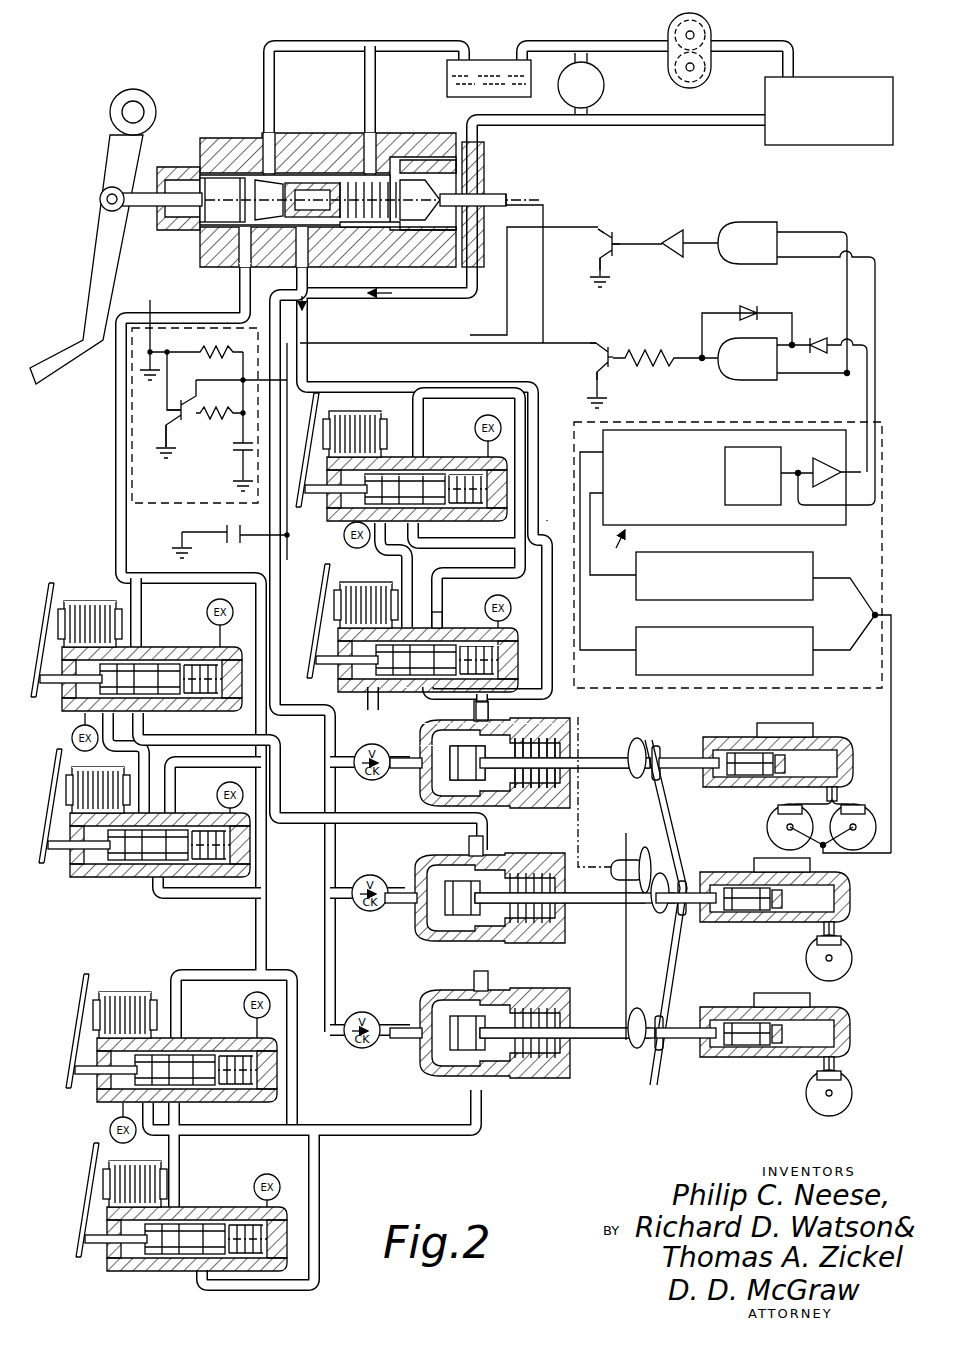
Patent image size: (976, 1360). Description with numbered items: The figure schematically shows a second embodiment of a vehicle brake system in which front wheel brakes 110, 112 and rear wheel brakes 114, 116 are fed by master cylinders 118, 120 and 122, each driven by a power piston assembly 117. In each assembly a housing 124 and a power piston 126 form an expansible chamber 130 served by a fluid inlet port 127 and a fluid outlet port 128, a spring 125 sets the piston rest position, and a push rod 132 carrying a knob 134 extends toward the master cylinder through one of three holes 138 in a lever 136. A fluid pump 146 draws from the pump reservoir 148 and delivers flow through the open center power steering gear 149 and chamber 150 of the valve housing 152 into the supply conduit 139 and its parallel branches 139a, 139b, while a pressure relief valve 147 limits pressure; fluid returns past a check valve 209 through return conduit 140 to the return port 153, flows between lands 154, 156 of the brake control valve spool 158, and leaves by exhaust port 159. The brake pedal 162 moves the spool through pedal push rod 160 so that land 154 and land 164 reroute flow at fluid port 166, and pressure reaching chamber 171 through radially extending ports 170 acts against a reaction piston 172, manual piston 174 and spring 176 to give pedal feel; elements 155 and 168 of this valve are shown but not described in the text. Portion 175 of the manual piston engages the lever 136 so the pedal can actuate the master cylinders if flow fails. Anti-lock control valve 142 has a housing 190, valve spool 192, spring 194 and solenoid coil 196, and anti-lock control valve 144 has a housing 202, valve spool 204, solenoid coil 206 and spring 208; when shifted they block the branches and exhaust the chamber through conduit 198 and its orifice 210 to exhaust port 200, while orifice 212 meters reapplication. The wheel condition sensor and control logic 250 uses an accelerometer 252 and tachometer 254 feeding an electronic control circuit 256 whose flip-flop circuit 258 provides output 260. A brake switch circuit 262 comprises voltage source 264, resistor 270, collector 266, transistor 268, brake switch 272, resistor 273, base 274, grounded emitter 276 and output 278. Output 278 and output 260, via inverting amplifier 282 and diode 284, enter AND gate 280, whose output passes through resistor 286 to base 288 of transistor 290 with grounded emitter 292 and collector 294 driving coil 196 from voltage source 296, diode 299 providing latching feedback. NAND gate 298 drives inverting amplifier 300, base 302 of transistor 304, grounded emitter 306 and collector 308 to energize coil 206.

The front wheel brake 110 is at (806, 1085).
The front wheel brake 112 is at (806, 950).
The rear wheel brake 114 is at (770, 813).
The rear wheel brake 116 is at (858, 803).
The power piston assembly 117 is at (512, 897).
The master cylinder 118 is at (740, 1005).
The master cylinder 120 is at (742, 888).
The master cylinder 122 is at (742, 752).
The housing 124 is at (540, 800).
The spring 125 is at (550, 725).
The power piston 126 is at (490, 795).
The fluid inlet port 127 is at (476, 712).
The fluid outlet port 128 is at (310, 781).
The expansible chamber 130 is at (438, 790).
The push rod 132 is at (590, 758).
The knob 134 is at (658, 745).
The lever 136 is at (626, 955).
The holes 138 is at (630, 768).
The supply conduit 139 is at (458, 285).
The parallel branch 139a is at (420, 408).
The parallel branch 139b is at (548, 515).
The return conduit 140 is at (268, 548).
The anti-lock control valve 142 is at (95, 598).
The anti-lock control valve 144 is at (120, 872).
The fluid pump 146 is at (712, 24).
The pressure relief valve 147 is at (604, 78).
The pump reservoir 148 is at (488, 58).
The open center power steering gear 149 is at (840, 76).
The chamber 150 is at (327, 187).
The valve housing 152 is at (245, 160).
The return port 153 is at (240, 262).
The land 154 is at (190, 232).
The outlet conduit 155 is at (195, 240).
The land 156 is at (295, 250).
The brake control valve spool 158 is at (212, 178).
The exhaust port 159 is at (272, 168).
The pedal push rod 160 is at (160, 206).
The brake pedal 162 is at (100, 218).
The land 164 is at (320, 183).
The fluid port 166 is at (311, 258).
The inlet port 168 is at (378, 160).
The radially extending ports 170 is at (272, 180).
The chamber 171 is at (364, 234).
The reaction piston 172 is at (423, 202).
The manual piston 174 is at (425, 192).
The portion 175 is at (495, 192).
The spring 176 is at (362, 180).
The housing 190 is at (460, 508).
The valve spool 192 is at (427, 467).
The spring 194 is at (495, 480).
The solenoid coil 196 is at (365, 418).
The conduit 198 is at (417, 631).
The exhaust port 200 is at (343, 524).
The housing 202 is at (375, 680).
The valve spool 204 is at (408, 684).
The solenoid coil 206 is at (345, 600).
The spring 208 is at (505, 645).
The check valve 209 is at (366, 771).
The orifice 210 is at (408, 545).
The orifice 212 is at (442, 622).
The wheel condition sensor and control logic 250 is at (728, 569).
The accelerometer 252 is at (815, 560).
The tachometer 254 is at (820, 630).
The electronic control circuit 256 is at (611, 547).
The flip-flop circuit 258 is at (752, 446).
The output 260 is at (785, 505).
The brake switch circuit 262 is at (170, 500).
The voltage source 264 is at (233, 452).
The collector 266 is at (181, 434).
The transistor 268 is at (150, 404).
The resistor 270 is at (220, 429).
The brake switch 272 is at (150, 330).
The resistor 273 is at (191, 353).
The base 274 is at (237, 367).
The emitter 276 is at (160, 410).
The output 278 is at (318, 378).
The AND gate 280 is at (718, 370).
The inverting amplifier 282 is at (824, 460).
The diode 284 is at (818, 337).
The resistor 286 is at (655, 350).
The base 288 is at (612, 345).
The transistor 290 is at (606, 356).
The emitter 292 is at (614, 366).
The collector 294 is at (596, 342).
The voltage source 296 is at (236, 545).
The NAND gate 298 is at (760, 221).
The diode 299 is at (748, 306).
The inverting amplifier 300 is at (676, 256).
The base 302 is at (604, 256).
The transistor 304 is at (618, 234).
The emitter 306 is at (600, 246).
The collector 308 is at (608, 230).